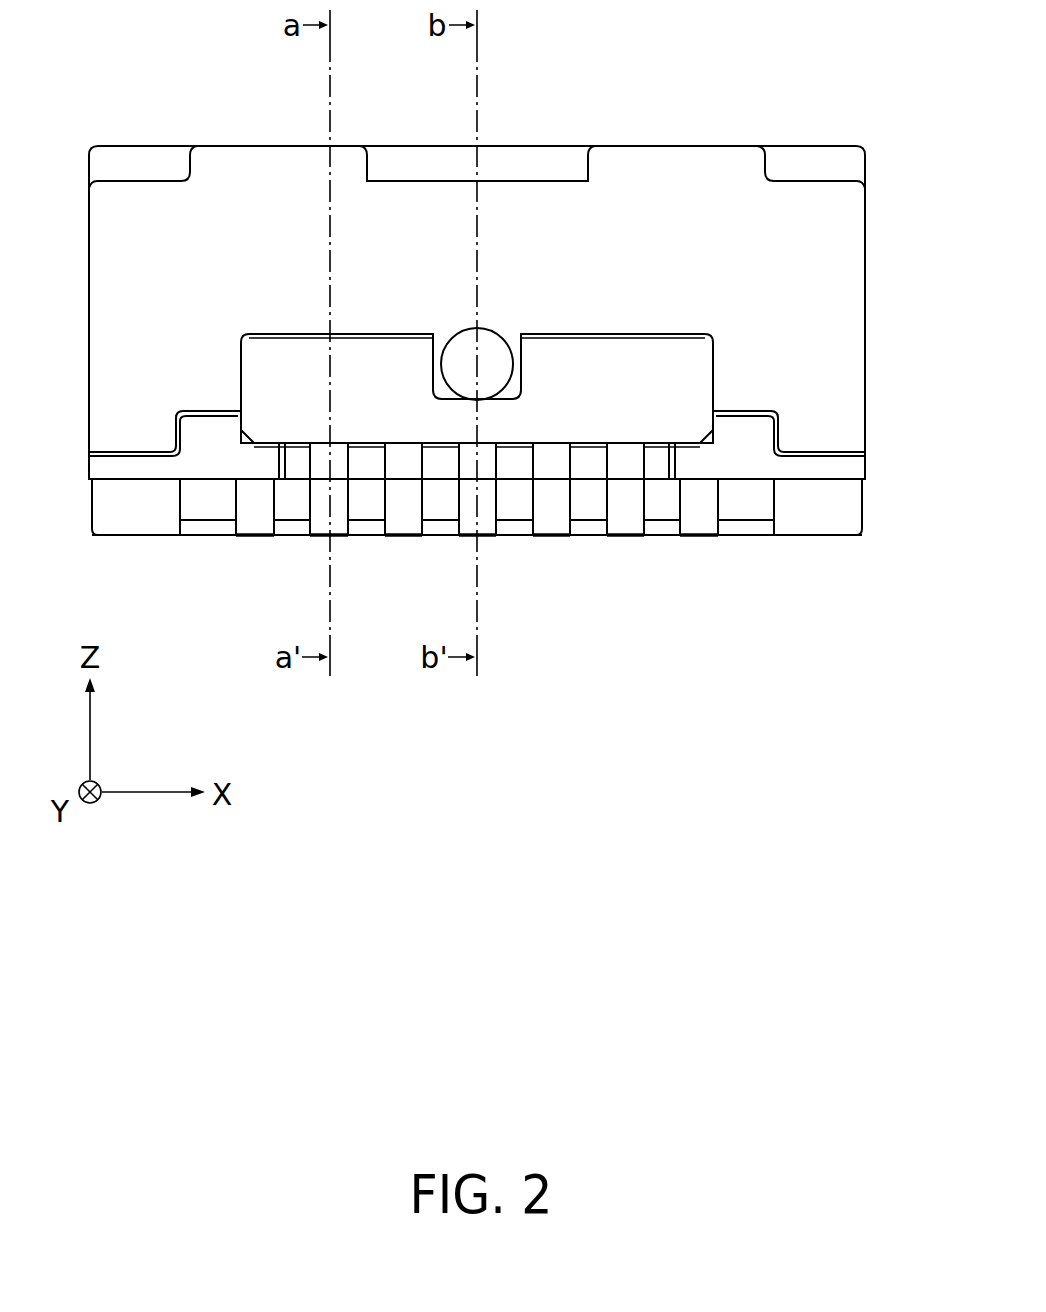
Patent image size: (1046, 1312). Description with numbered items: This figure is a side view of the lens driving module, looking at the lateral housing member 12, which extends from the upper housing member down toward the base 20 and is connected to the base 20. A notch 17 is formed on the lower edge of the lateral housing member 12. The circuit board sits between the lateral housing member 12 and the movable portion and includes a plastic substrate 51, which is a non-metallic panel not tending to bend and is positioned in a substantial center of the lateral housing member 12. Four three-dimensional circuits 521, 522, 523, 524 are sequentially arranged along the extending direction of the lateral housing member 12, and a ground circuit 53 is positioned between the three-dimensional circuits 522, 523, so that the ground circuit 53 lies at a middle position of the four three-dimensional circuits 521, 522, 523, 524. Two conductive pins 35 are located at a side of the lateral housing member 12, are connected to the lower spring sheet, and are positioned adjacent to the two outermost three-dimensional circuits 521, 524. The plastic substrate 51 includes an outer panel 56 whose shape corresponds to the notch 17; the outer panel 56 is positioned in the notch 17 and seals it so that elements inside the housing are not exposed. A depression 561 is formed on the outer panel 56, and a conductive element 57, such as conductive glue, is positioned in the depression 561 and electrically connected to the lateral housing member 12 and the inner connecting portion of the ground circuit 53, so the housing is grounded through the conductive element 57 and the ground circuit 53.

The lateral housing member 12 is at (822, 256).
The notch 17 is at (597, 256).
The base 20 is at (820, 507).
The conductive pins 35 is at (257, 522).
The plastic substrate 51 is at (288, 369).
The 3-D circuit 521 is at (320, 522).
The 3-D circuit 522 is at (405, 522).
The ground circuit 53 is at (487, 522).
The 3-D circuit 523 is at (551, 522).
The 3-D circuit 524 is at (625, 522).
The outer panel 56 is at (403, 368).
The conductive element 57 is at (493, 352).
The depression 561 is at (522, 360).